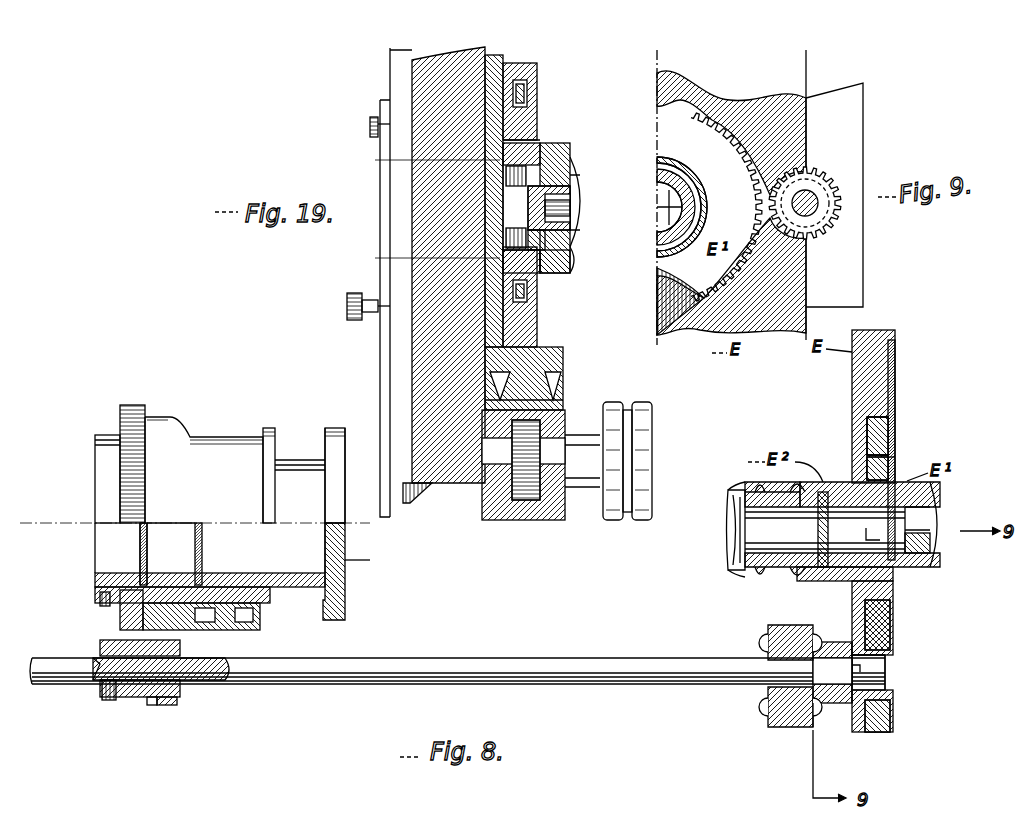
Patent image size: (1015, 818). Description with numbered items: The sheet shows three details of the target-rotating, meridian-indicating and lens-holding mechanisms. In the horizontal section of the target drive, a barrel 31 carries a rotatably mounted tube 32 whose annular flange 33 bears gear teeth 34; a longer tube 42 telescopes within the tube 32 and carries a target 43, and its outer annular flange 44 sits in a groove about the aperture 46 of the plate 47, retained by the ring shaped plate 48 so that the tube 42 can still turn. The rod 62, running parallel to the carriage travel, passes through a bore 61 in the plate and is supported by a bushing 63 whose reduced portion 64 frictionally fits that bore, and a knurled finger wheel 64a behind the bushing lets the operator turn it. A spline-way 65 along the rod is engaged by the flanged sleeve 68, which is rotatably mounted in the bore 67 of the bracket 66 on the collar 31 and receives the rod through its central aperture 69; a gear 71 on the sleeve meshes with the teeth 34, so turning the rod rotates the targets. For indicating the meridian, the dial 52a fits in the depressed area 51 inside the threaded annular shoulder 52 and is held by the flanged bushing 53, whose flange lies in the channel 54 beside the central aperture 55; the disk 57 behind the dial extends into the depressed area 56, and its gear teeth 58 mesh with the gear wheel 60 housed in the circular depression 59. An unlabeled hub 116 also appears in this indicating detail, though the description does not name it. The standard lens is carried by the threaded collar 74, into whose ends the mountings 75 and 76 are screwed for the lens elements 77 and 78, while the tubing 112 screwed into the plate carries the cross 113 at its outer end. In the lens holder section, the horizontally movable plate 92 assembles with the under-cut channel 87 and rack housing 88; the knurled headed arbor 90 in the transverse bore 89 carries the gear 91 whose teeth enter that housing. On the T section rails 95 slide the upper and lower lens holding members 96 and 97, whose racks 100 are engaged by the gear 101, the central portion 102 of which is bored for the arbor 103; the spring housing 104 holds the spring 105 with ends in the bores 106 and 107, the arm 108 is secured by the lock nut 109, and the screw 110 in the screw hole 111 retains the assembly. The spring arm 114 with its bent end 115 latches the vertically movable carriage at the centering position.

In FIG. 8, the barrel 31 is at (221, 437).
In FIG. 8, the tube 32 is at (95, 600).
In FIG. 8, the annular flange 33 is at (118, 620).
In FIG. 8, the gear teeth 34 is at (120, 427).
In FIG. 8, the tube 42 is at (300, 573).
In FIG. 8, the target 43 is at (203, 545).
In FIG. 8, the annular flange 44 is at (140, 545).
In FIG. 8, the aperture 46 is at (358, 565).
In FIG. 8, the plate 47 is at (338, 428).
In FIG. 8, the ring shaped plate 48 is at (323, 432).
In FIG. 8, the depressed area 51 is at (895, 347).
In FIG. 8, the annular shoulder 52 is at (907, 467).
In FIG. 8, the dial 52a is at (897, 380).
In FIG. 9, the bushing 53 is at (677, 260).
In FIG. 8, the bushing 53 is at (895, 450).
In FIG. 8, the channel 54 is at (880, 450).
In FIG. 8, the central aperture 55 is at (895, 608).
In FIG. 8, the depressed area 56 is at (880, 418).
In FIG. 9, the disk 57 is at (766, 163).
In FIG. 8, the disk 57 is at (895, 417).
In FIG. 9, the gear teeth 58 is at (743, 122).
In FIG. 8, the gear teeth 58 is at (880, 420).
In FIG. 9, the circular depression 59 is at (798, 158).
In FIG. 8, the circular depression 59 is at (868, 722).
In FIG. 9, the gear wheel 60 is at (799, 229).
In FIG. 8, the gear wheel 60 is at (893, 693).
In FIG. 8, the bore 61 is at (848, 718).
In FIG. 9, the rod 62 is at (821, 197).
In FIG. 8, the rod 62 is at (360, 684).
In FIG. 9, the bushing 63 is at (838, 213).
In FIG. 8, the bushing 63 is at (822, 642).
In FIG. 8, the reduced portion 64 is at (860, 652).
In FIG. 8, the knurled finger wheel 64a is at (775, 712).
In FIG. 8, the spline-way 65 is at (230, 661).
In FIG. 8, the bracket 66 is at (168, 705).
In FIG. 8, the bore 67 is at (148, 702).
In FIG. 8, the flanged sleeve 68 is at (181, 647).
In FIG. 8, the central aperture 69 is at (100, 681).
In FIG. 8, the gear 71 is at (113, 694).
In FIG. 8, the collar 74 is at (768, 578).
In FIG. 8, the mounting 75 is at (735, 561).
In FIG. 8, the mounting 76 is at (760, 521).
In FIG. 8, the lens element 77 is at (730, 521).
In FIG. 8, the lens element 78 is at (790, 481).
In FIG. 19, the under-cut channel 87 is at (563, 381).
In FIG. 19, the rack housing 88 is at (563, 417).
In FIG. 19, the transverse bore 89 is at (553, 521).
In FIG. 19, the knurled headed arbor 90 is at (590, 488).
In FIG. 19, the gear 91 is at (527, 472).
In FIG. 19, the plate 92 is at (563, 352).
In FIG. 19, the T section rails 95 is at (537, 88).
In FIG. 19, the upper lens holding member 96 is at (538, 103).
In FIG. 19, the lower lens holding member 97 is at (537, 308).
In FIG. 19, the racks 100 is at (538, 131).
In FIG. 19, the gear 101 is at (572, 255).
In FIG. 19, the central portion 102 is at (572, 244).
In FIG. 19, the arbor 103 is at (575, 172).
In FIG. 19, the spring housing 104 is at (405, 150).
In FIG. 19, the spring 105 is at (563, 150).
In FIG. 19, the bore 106 is at (572, 152).
In FIG. 19, the bore 107 is at (412, 255).
In FIG. 19, the arm 108 is at (572, 275).
In FIG. 19, the lock nut 109 is at (573, 268).
In FIG. 19, the screw 110 is at (585, 193).
In FIG. 19, the screw hole 111 is at (572, 240).
In FIG. 8, the tubing 112 is at (913, 570).
In FIG. 9, the cross 113 is at (680, 204).
In FIG. 8, the cross 113 is at (928, 513).
In FIG. 19, the spring arm 114 is at (390, 355).
In FIG. 19, the bent end 115 is at (405, 498).
In FIG. 9, the hub 116 is at (688, 226).